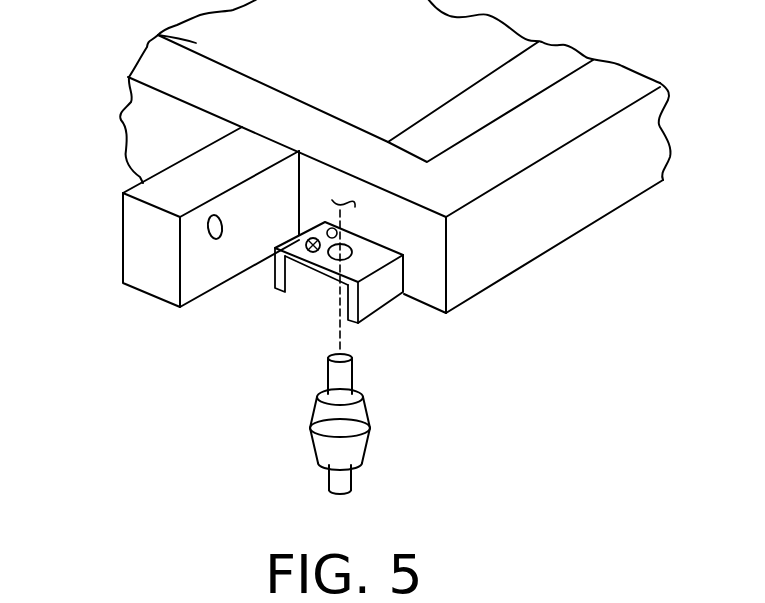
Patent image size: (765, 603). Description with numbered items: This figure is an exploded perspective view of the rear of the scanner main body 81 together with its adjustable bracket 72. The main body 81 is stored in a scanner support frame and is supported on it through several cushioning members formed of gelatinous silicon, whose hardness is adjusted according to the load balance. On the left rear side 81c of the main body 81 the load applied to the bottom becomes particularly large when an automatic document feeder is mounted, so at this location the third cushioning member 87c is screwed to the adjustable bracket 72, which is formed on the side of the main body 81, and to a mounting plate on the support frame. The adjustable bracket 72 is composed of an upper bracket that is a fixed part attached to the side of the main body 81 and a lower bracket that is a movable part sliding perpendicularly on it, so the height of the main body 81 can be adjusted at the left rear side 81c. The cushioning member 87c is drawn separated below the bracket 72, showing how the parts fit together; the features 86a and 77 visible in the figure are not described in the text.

The main body 81 is at (157, 34).
The left rear side 81c is at (470, 300).
The hole 86a is at (215, 239).
The screw 77 is at (306, 262).
The adjustable bracket 72 is at (378, 304).
The third cushioning member 87c is at (367, 447).